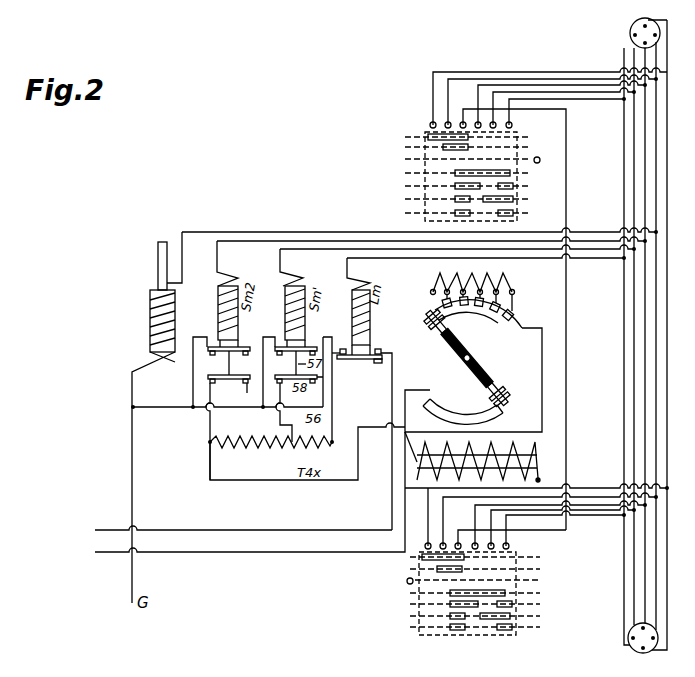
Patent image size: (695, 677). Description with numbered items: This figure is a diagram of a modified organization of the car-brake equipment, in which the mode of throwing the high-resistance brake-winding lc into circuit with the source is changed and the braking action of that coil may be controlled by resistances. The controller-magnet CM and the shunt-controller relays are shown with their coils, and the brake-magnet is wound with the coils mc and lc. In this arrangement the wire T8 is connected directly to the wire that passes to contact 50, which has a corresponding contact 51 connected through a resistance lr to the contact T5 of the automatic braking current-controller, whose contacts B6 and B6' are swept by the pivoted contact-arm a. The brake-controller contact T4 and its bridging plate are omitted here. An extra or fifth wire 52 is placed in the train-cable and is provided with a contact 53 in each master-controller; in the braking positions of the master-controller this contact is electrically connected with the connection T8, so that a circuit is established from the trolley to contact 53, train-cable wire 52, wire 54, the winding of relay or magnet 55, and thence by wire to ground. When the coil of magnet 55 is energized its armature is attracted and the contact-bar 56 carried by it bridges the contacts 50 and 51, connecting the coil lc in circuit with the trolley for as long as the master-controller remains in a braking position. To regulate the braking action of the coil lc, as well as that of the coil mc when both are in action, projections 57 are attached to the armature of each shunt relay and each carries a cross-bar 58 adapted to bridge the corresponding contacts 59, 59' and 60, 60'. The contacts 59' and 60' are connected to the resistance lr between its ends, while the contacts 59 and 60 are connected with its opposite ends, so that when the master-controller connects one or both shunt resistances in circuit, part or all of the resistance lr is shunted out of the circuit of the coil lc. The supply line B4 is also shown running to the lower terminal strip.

The contact 50 is at (383, 352).
The contact 51 is at (357, 319).
The train-cable wire 52 is at (624, 279).
The contact 53 is at (520, 125).
The wire 54 is at (400, 270).
The relay or magnet 55 is at (396, 286).
The contact-bar 56 is at (378, 373).
The projection 57 is at (231, 364).
The cross-bar 58 is at (229, 385).
The contact 59 is at (334, 385).
The contact 59' is at (291, 412).
The contact 60 is at (187, 430).
The contact 60' is at (246, 399).
The master-controller position a is at (473, 352).
The contact of automatic controller B6 is at (526, 312).
The contact of automatic controller B6' is at (571, 403).
The contact T5 is at (498, 398).
The wire T8 is at (566, 333).
The contact T4 is at (243, 522).
The battery line B4 is at (382, 533).
The coil mc is at (540, 460).
The high-resistance brake-winding lc is at (414, 457).
The resistance lr is at (307, 449).
The controller-magnet CM is at (164, 417).